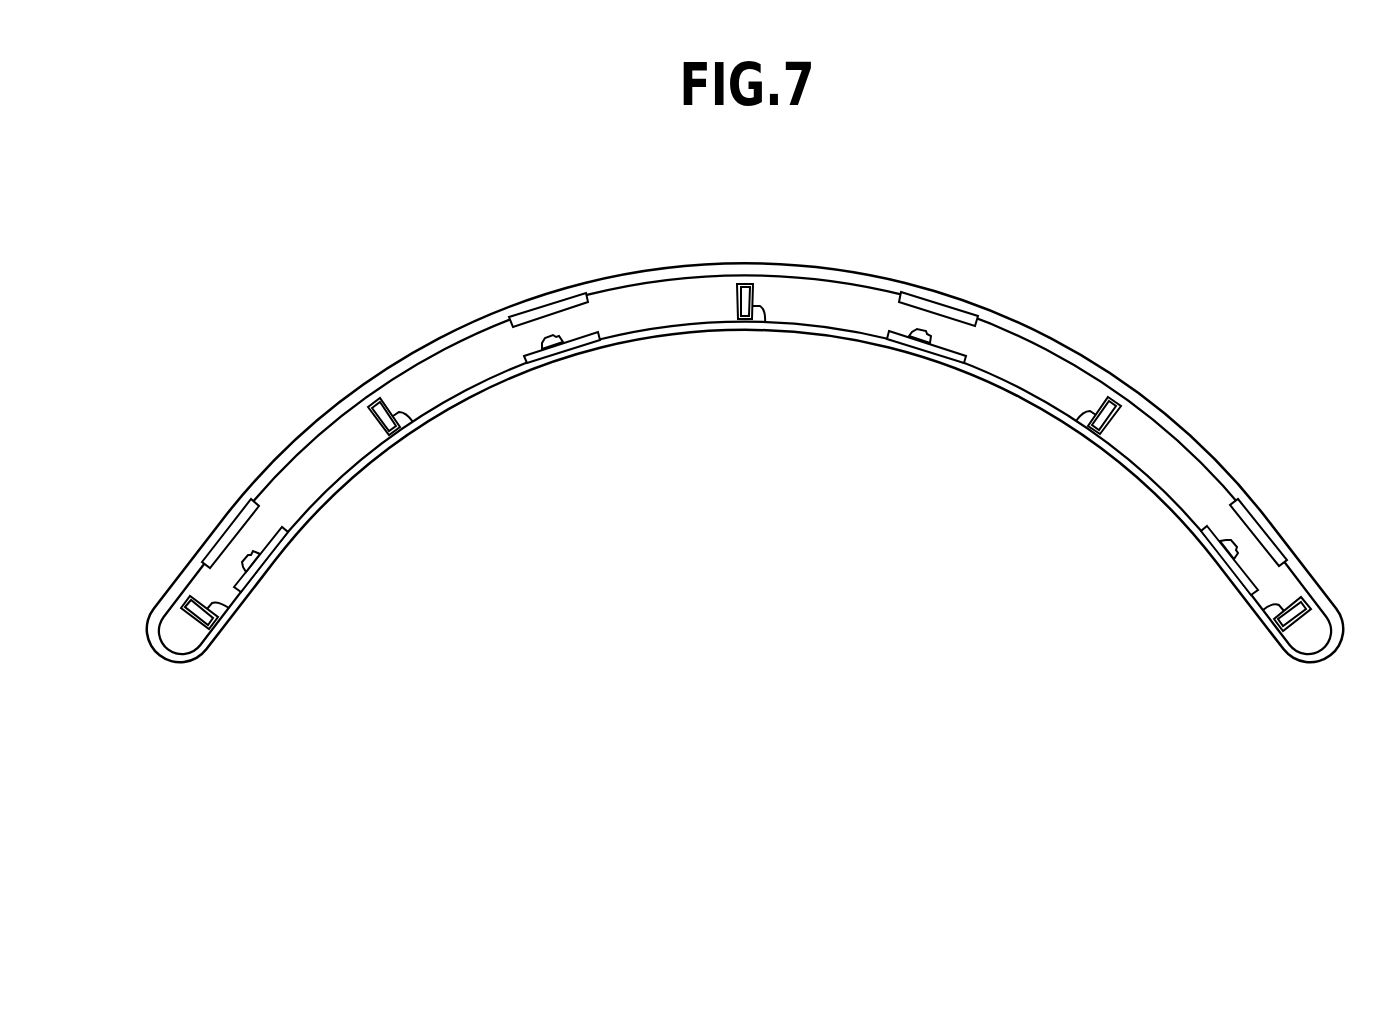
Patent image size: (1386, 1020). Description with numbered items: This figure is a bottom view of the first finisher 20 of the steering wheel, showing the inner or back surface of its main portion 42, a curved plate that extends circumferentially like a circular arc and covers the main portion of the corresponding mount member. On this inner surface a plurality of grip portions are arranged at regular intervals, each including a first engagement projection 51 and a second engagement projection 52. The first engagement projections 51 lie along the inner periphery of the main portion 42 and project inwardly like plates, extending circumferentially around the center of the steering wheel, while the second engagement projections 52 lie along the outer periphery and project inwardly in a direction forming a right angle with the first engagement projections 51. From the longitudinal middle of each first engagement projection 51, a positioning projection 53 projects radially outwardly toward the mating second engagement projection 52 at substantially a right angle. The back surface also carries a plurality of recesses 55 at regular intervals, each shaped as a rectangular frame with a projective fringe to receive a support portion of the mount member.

The first finisher 20 is at (771, 473).
The main portion 42 is at (1155, 449).
The first engagement projection 51 is at (583, 342).
The second engagement projection 52 is at (517, 317).
The positioning projection 53 is at (543, 345).
The recess 55 is at (765, 323).